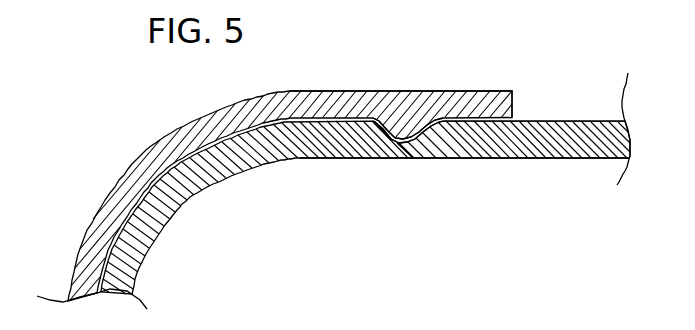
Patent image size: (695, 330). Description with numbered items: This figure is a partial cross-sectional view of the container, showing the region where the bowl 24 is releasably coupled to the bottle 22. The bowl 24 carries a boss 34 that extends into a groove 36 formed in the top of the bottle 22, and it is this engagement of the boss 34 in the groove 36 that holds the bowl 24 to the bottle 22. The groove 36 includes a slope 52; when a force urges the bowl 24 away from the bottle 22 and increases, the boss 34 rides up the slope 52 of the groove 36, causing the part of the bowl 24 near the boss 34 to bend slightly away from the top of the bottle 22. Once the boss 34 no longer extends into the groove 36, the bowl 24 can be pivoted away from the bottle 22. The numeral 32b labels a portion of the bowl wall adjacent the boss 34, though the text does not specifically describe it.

The bowl 24 is at (133, 126).
The bottle 22 is at (281, 187).
The flange portion of outer layer 32b is at (478, 91).
The boss 34 is at (402, 118).
The slope 52 is at (387, 137).
The groove 36 is at (453, 158).